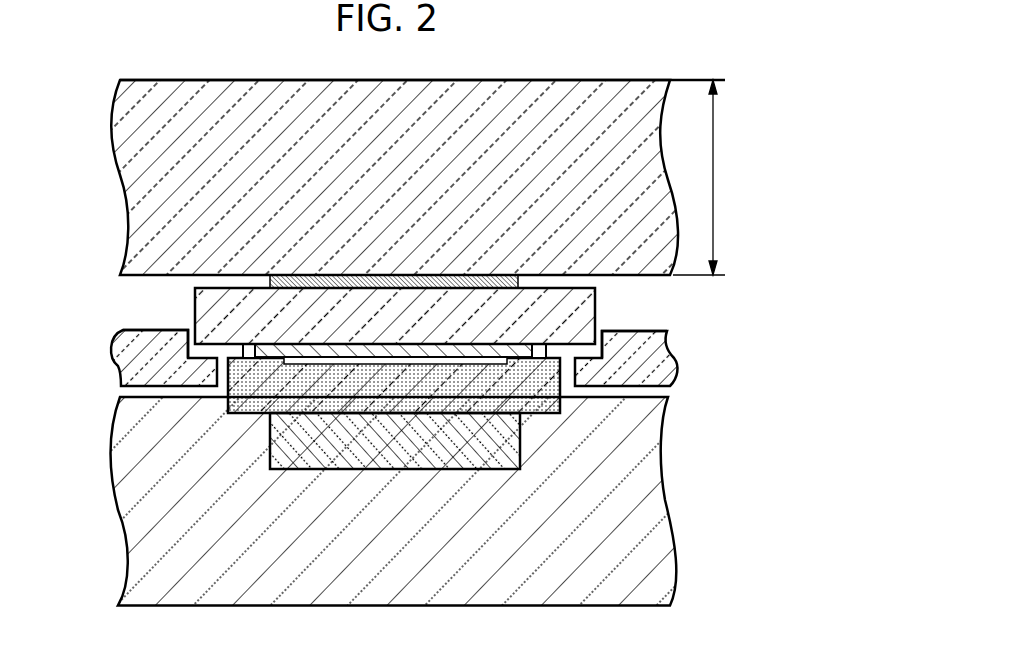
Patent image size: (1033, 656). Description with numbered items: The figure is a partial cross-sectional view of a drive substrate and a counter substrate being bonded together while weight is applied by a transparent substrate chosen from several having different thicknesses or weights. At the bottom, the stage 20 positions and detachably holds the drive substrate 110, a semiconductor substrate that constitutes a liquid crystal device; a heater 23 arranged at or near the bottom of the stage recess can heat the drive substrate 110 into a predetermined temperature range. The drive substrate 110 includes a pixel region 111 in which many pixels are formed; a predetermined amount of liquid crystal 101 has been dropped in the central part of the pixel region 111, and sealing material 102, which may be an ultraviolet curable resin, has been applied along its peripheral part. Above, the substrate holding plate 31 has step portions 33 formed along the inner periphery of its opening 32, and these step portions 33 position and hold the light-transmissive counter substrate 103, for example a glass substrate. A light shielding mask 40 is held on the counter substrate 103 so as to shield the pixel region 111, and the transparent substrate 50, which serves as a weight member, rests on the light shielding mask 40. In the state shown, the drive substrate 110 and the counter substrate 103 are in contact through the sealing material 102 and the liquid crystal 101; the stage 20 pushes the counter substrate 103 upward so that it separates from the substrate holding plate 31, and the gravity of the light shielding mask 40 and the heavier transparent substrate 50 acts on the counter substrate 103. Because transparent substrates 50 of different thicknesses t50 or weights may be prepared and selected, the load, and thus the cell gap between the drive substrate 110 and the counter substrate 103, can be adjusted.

The stage 20 is at (673, 537).
The heater 23 is at (471, 471).
The substrate holding plate 31 is at (119, 362).
The opening 32 is at (222, 403).
The step portion 33 is at (177, 347).
The light shielding mask 40 is at (394, 275).
The transparent substrate 50 is at (121, 181).
The thickness of the transparent substrate t50 is at (712, 177).
The liquid crystal 101 is at (375, 349).
The sealing material 102 is at (249, 351).
The counter substrate 103 is at (596, 302).
The drive substrate 110 is at (314, 358).
The pixel region 111 is at (438, 357).